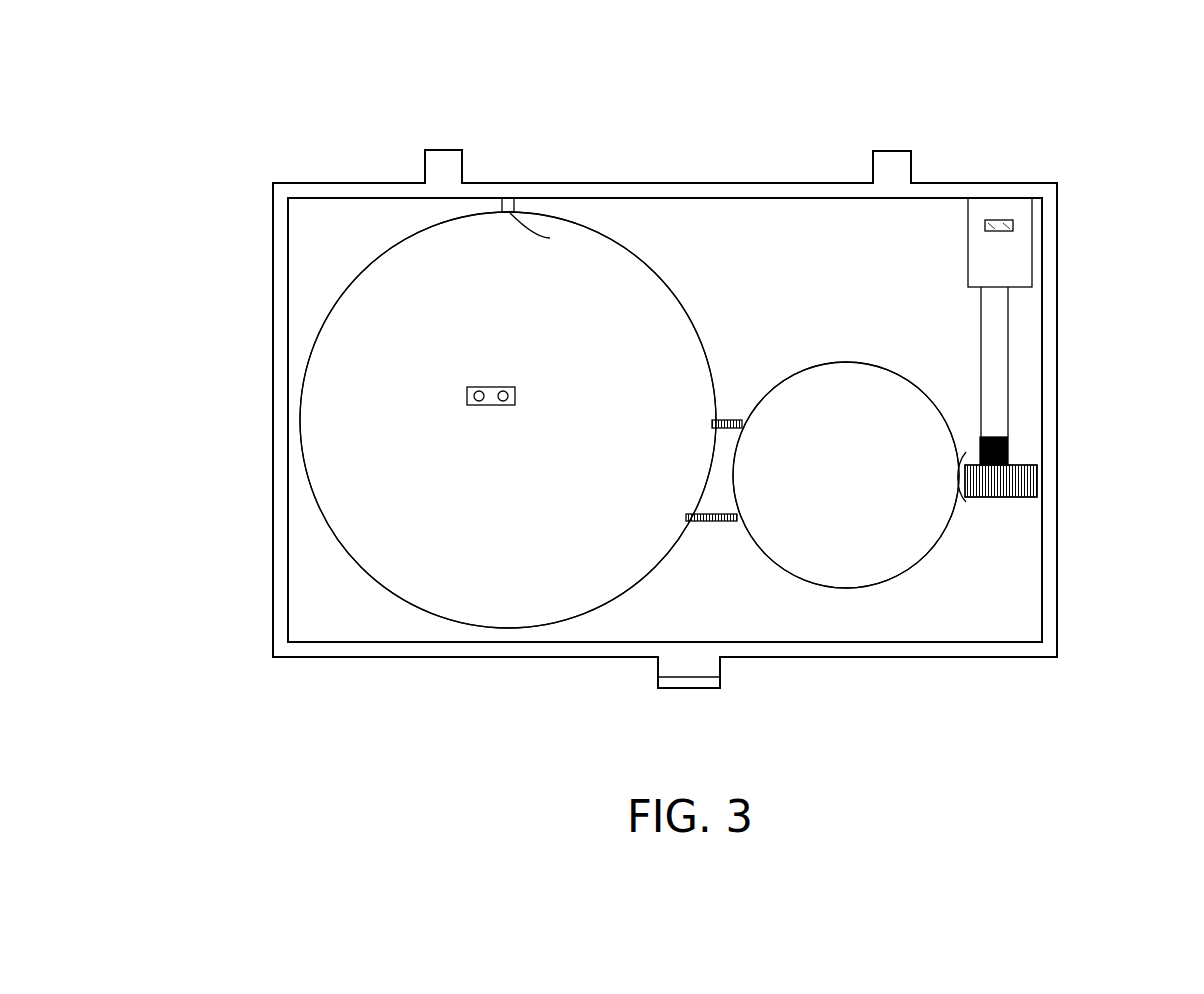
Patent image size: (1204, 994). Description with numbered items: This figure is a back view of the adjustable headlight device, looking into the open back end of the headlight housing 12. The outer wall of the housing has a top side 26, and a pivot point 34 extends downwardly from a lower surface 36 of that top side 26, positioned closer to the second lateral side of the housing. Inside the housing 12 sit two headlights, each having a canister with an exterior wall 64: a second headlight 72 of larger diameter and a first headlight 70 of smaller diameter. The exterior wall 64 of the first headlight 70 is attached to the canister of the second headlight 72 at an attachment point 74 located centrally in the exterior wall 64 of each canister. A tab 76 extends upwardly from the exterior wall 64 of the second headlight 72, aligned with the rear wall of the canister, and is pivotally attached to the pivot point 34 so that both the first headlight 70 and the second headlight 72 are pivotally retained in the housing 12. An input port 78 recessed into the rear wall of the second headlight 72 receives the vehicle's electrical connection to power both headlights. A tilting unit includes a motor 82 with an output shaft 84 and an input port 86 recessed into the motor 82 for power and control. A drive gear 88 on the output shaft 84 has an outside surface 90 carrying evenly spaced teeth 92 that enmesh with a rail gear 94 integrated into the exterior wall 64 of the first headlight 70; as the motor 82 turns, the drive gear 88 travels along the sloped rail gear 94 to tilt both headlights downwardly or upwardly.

The headlight housing 12 is at (355, 138).
The top side 26 is at (707, 183).
The pivot point 34 is at (500, 210).
The lower surface 36 is at (937, 198).
The exterior wall 64 is at (300, 425).
The first headlight 70 is at (920, 576).
The second headlight 72 is at (468, 565).
The attachment point 74 is at (720, 428).
The tab 76 is at (550, 238).
The input port 78 is at (482, 387).
The motor 82 is at (968, 248).
The output shaft 84 is at (1008, 337).
The input port 86 is at (1004, 219).
The drive gear 88 is at (1040, 494).
The outside surface 90 is at (1037, 468).
The teeth 92 is at (988, 498).
The rail gear 94 is at (959, 455).